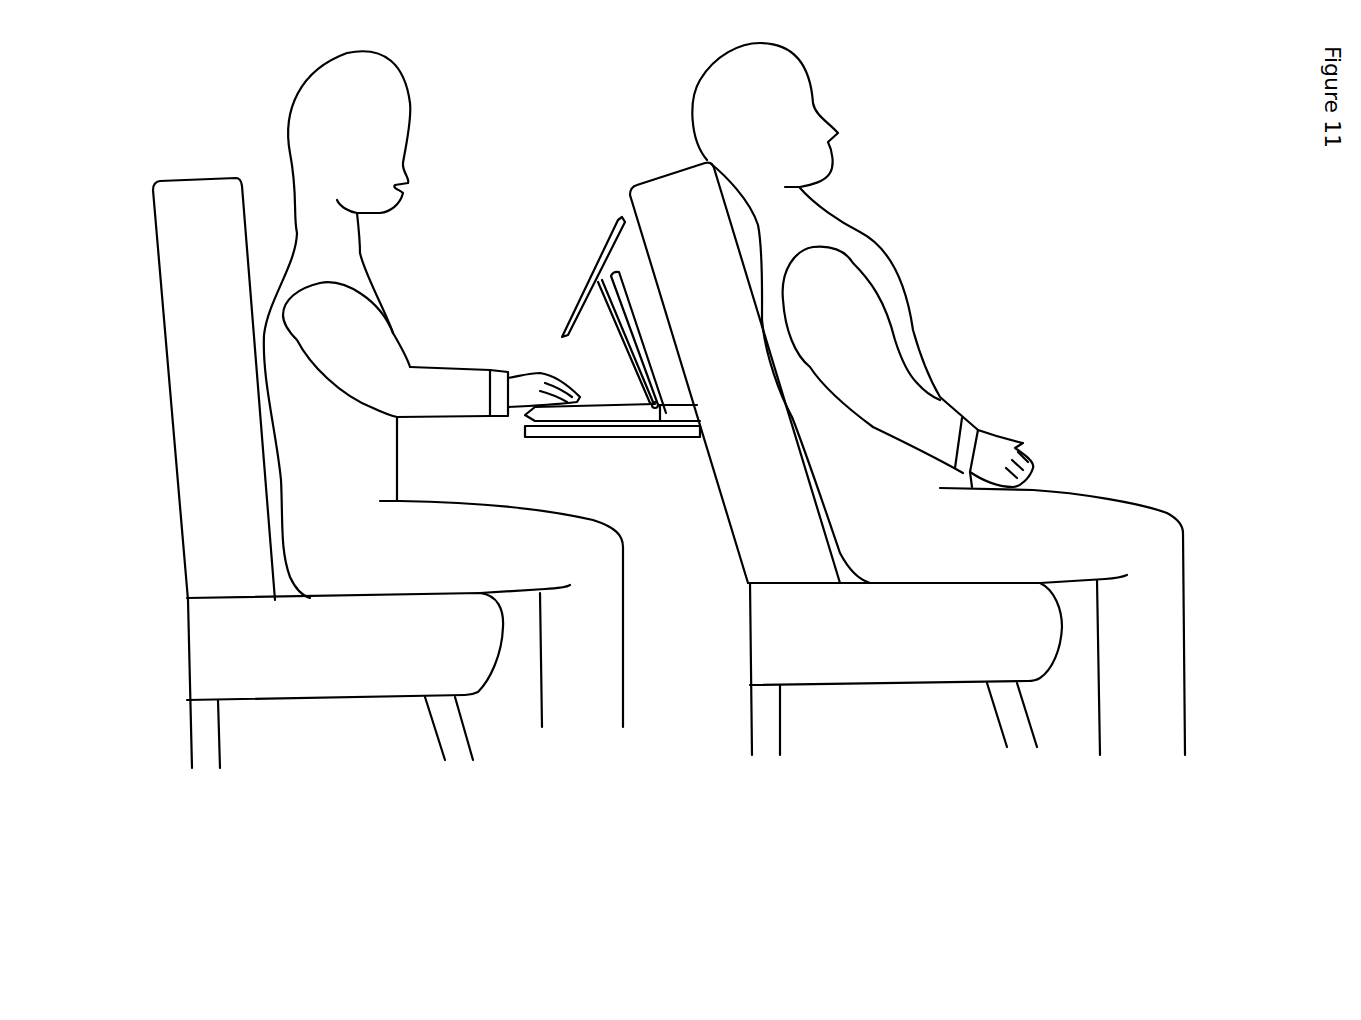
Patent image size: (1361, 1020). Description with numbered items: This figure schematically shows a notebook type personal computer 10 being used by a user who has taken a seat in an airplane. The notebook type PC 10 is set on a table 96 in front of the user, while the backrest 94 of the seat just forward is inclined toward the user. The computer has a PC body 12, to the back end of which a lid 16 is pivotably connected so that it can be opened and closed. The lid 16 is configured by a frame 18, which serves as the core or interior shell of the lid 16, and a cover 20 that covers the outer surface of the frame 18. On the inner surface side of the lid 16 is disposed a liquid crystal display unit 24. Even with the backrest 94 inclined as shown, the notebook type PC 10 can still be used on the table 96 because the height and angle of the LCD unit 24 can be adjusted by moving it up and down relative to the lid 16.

The notebook type personal computer 10 is at (571, 198).
The PC body 12 is at (608, 416).
The lid 16 is at (645, 287).
The frame 18 is at (612, 306).
The cover 20 is at (630, 313).
The liquid crystal display unit 24 is at (604, 250).
The backrest 94 is at (672, 187).
The table 96 is at (667, 432).